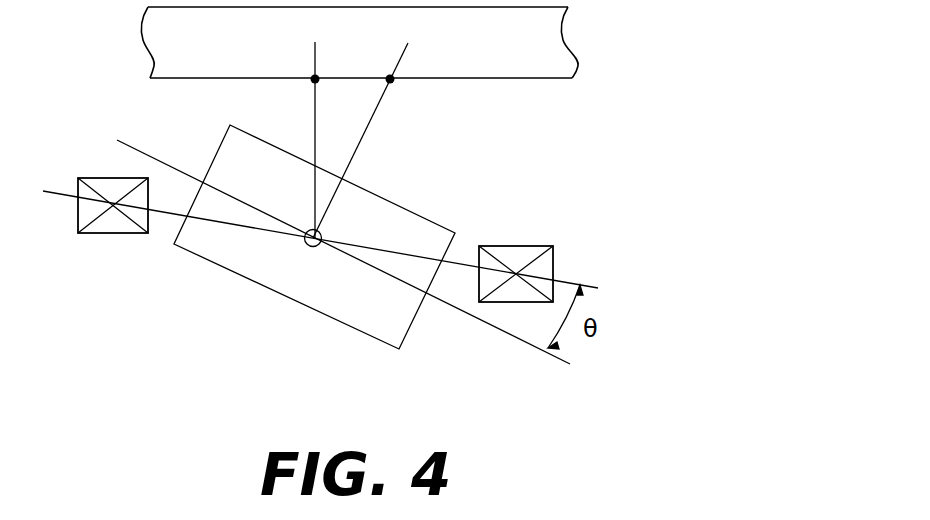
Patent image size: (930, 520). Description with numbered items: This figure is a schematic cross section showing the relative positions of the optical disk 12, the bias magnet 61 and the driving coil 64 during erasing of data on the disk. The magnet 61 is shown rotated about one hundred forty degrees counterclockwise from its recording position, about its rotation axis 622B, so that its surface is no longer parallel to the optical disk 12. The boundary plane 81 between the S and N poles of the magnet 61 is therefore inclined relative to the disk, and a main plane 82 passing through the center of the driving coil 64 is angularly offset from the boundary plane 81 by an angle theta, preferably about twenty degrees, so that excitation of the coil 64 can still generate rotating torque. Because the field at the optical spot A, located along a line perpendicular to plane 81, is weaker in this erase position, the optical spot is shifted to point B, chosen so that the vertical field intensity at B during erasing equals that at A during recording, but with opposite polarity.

The optical disk 12 is at (552, 43).
The bias magnet 61 is at (395, 212).
The pivot axis 622B is at (307, 248).
The driving coil 64 is at (112, 233).
The boundary plane 81 is at (515, 338).
The optical axis line 82 is at (607, 328).
The optical spot A is at (313, 78).
The shifted point B is at (392, 78).